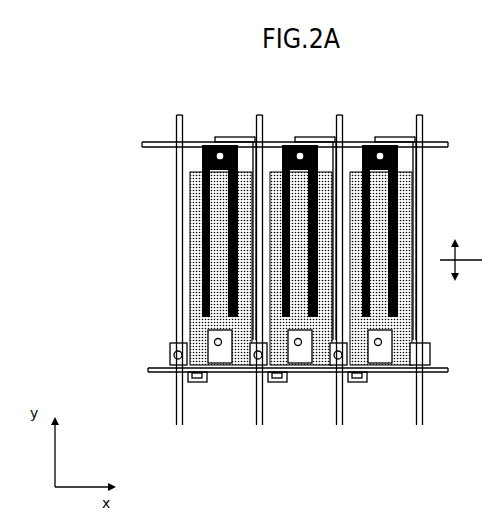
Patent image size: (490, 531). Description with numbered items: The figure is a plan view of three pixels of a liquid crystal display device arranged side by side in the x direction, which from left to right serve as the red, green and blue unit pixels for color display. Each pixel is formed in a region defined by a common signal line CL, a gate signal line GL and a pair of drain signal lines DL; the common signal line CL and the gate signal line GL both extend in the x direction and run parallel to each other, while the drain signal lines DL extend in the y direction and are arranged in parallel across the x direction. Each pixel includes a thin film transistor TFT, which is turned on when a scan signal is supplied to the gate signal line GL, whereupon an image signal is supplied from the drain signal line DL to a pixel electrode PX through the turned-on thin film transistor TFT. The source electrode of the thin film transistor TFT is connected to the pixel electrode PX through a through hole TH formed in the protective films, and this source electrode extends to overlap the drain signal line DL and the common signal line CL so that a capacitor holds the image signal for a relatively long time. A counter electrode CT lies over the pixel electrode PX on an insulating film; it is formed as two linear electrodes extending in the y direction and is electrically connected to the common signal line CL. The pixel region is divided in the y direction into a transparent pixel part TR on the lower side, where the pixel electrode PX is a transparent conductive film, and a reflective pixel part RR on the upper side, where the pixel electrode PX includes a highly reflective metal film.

The common signal line CL is at (157, 145).
The pixel electrode PX is at (190, 235).
The counter electrode CT is at (203, 307).
The through hole TH is at (208, 333).
The drain signal line DL is at (168, 348).
The gate signal line GL is at (148, 372).
The thin film transistor TFT is at (205, 380).
The reflective pixel part RR is at (457, 236).
The transparent pixel part TR is at (461, 285).